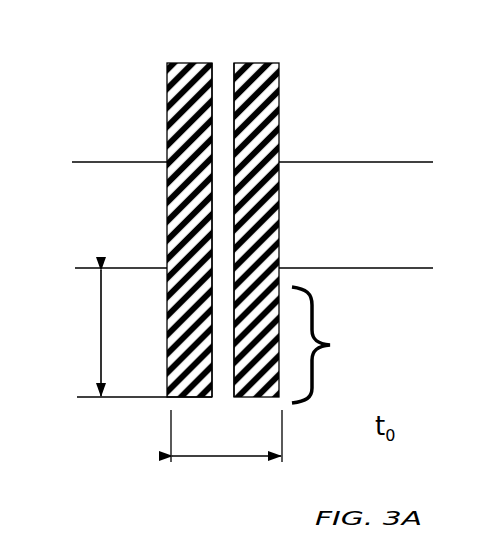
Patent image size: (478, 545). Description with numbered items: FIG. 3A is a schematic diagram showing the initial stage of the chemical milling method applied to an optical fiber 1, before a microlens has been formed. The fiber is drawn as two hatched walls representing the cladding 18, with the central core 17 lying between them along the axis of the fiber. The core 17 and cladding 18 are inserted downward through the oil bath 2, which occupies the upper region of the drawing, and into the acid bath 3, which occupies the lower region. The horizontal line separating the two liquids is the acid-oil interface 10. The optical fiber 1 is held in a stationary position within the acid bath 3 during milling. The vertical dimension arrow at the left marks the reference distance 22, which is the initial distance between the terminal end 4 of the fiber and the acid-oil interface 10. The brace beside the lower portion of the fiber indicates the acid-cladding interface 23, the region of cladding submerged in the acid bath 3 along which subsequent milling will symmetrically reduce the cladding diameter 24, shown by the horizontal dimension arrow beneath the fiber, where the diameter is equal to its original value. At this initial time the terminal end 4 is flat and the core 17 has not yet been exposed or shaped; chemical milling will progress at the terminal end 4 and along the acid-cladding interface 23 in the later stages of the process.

The optical fiber 1 is at (173, 67).
The core 17 is at (228, 102).
The cladding 18 is at (279, 137).
The oil bath 2 is at (399, 234).
The acid-oil interface 10 is at (403, 275).
The acid bath 3 is at (414, 378).
The reference distance 22 is at (98, 336).
The acid-cladding interface 23 is at (329, 345).
The terminal end 4 is at (174, 398).
The cladding diameter 24 is at (215, 460).